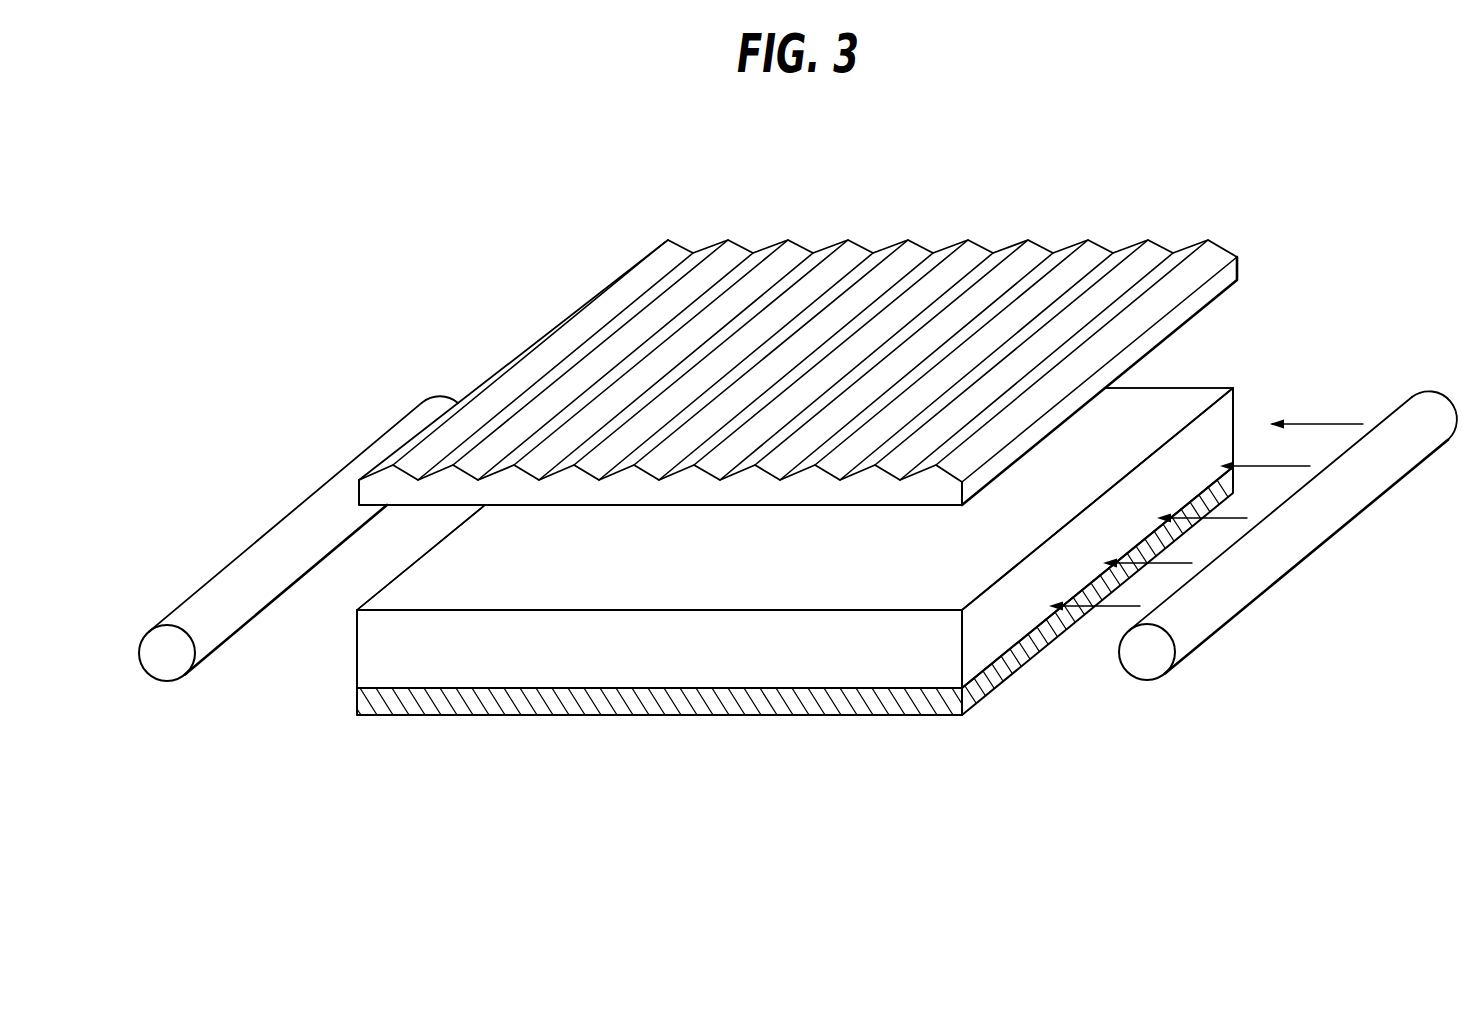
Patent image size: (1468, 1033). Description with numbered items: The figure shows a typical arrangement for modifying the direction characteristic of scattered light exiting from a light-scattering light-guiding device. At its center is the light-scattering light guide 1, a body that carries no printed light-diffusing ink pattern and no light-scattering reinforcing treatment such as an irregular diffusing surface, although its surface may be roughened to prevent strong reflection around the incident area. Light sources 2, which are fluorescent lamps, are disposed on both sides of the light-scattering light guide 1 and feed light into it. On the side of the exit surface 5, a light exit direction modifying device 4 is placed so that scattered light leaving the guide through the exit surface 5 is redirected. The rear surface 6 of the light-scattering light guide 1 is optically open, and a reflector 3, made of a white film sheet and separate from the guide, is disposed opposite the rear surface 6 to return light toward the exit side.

The light-scattering light guide 1 is at (1010, 673).
The light sources 2 is at (255, 545).
The reflector 3 is at (643, 698).
The light exit direction modifying device 4 is at (1243, 268).
The exit surface 5 is at (1150, 417).
The rear surface 6 is at (352, 687).